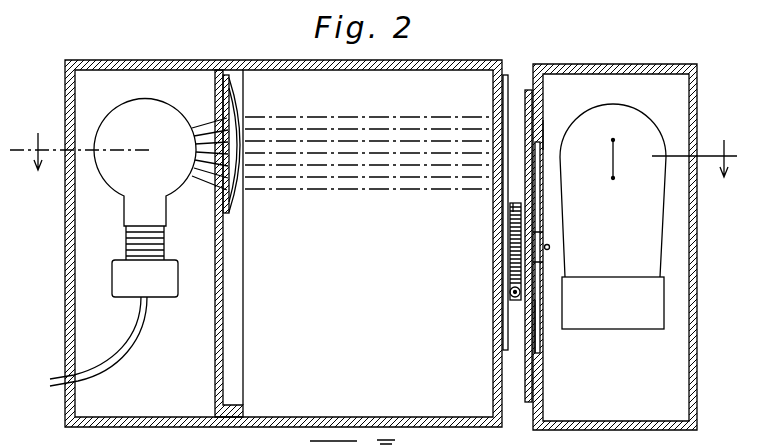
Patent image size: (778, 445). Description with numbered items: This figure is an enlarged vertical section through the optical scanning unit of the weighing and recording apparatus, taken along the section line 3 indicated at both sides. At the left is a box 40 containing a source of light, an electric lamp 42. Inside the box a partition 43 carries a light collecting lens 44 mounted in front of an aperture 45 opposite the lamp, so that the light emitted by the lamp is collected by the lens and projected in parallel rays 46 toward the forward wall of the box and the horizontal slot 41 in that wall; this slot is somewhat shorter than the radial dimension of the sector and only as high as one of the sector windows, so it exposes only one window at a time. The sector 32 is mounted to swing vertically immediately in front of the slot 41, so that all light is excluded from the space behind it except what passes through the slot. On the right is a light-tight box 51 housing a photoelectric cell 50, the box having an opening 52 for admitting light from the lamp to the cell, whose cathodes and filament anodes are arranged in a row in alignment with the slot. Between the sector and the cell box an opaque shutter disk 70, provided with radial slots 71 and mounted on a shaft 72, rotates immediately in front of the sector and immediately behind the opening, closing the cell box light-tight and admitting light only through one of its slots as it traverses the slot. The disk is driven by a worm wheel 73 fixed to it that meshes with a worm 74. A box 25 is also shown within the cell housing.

The section line 3- 3 is at (381, 155).
The battery box 25 is at (527, 296).
The sector 32 is at (508, 300).
The box 40 is at (138, 420).
The horizontal slot 41 is at (497, 162).
The electric lamp 42 is at (124, 98).
The partition 43 is at (224, 268).
The light collecting lens 44 is at (243, 119).
The aperture 45 is at (228, 125).
The parallel rays 46 is at (333, 140).
The photoelectric cell 50 is at (661, 116).
The light-tight box 51 is at (613, 426).
The opening 52 is at (544, 144).
The shutter disk 70 is at (533, 320).
The radial slot 71 is at (534, 342).
The shaft 72 is at (549, 247).
The worm wheel 73 is at (511, 215).
The worm 74 is at (512, 300).